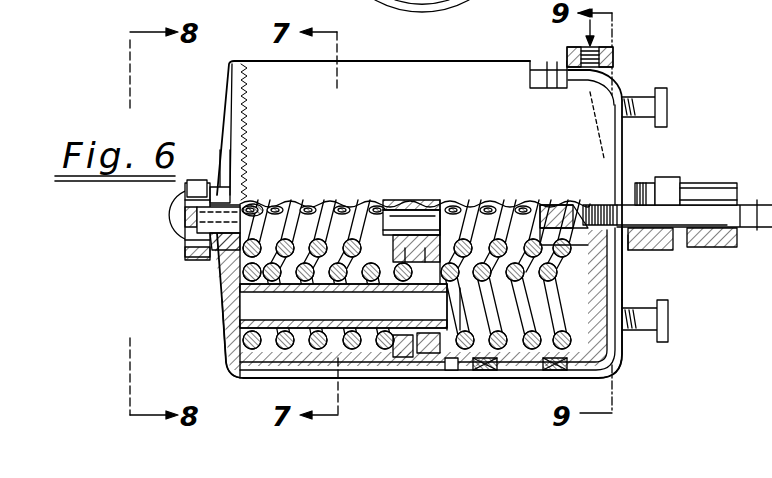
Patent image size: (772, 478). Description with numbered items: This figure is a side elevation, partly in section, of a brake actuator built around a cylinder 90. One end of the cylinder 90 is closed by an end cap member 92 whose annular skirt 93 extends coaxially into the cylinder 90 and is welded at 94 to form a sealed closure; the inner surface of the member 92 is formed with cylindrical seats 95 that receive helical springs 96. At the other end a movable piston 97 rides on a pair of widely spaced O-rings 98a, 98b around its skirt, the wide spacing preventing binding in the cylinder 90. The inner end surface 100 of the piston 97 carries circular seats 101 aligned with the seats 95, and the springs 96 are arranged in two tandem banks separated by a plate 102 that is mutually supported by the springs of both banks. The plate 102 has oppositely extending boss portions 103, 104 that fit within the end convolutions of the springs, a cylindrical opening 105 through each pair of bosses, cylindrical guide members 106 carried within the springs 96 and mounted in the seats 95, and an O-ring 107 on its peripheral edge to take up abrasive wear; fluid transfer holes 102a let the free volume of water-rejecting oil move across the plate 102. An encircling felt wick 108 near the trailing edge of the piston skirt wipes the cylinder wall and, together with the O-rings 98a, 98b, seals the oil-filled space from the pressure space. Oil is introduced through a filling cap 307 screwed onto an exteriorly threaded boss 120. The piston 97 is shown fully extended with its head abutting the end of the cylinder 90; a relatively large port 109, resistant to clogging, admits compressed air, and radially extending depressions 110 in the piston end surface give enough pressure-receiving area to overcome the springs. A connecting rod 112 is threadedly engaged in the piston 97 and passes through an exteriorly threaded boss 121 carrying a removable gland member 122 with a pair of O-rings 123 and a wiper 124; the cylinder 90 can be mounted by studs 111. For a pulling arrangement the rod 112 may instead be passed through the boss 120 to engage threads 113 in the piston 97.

The cylinder 90 is at (447, 76).
The end cap member 92 is at (232, 333).
The annular skirt 93 is at (312, 363).
The weld 94 is at (246, 113).
The cylindrical seats 95 is at (277, 205).
The helical springs 96 is at (410, 283).
The movable piston 97 is at (604, 372).
The O-ring 98a is at (553, 72).
The O-ring 98b is at (482, 370).
The inner end surface 100 is at (584, 114).
The circular seats 101 is at (550, 204).
The plate 102 is at (418, 331).
The fluid transfer holes 102a is at (400, 251).
The boss portion 103 is at (383, 230).
The boss portion 104 is at (460, 288).
The cylindrical opening 105 is at (398, 198).
The cylindrical guide members 106 is at (328, 321).
The O-ring 107 is at (427, 367).
The wick 108 is at (452, 371).
The port 109 is at (603, 48).
The radially extending depressions 110 is at (610, 337).
The studs 111 is at (647, 97).
The connecting rod 112 is at (745, 200).
The threads 113 is at (562, 205).
The exteriorly threaded boss 120 is at (224, 243).
The exteriorly threaded boss 121 is at (648, 188).
The gland member 122 is at (705, 186).
The O-rings 123 is at (712, 242).
The wiper 124 is at (680, 246).
The filling cap 307 is at (198, 257).